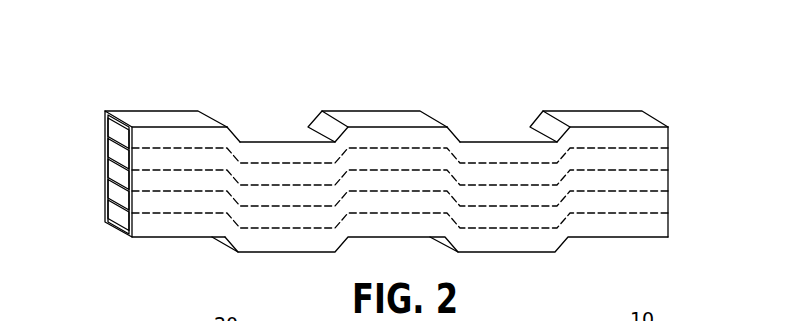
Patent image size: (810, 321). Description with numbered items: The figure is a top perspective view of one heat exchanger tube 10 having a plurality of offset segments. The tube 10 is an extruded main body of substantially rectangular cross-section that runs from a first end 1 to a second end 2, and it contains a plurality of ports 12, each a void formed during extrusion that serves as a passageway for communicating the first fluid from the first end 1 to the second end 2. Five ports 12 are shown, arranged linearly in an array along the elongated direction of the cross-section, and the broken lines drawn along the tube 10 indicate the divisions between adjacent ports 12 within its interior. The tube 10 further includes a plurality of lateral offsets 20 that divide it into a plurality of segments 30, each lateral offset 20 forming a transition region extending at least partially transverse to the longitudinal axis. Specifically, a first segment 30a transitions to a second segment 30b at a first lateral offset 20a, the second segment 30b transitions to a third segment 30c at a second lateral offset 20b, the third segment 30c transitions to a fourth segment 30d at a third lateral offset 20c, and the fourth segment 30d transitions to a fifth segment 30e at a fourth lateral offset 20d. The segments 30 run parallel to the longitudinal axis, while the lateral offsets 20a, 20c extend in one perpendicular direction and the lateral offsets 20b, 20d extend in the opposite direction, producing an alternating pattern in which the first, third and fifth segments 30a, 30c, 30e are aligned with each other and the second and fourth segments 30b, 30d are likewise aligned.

The tube 10 is at (152, 38).
The first end 1 is at (105, 111).
The second end 2 is at (636, 111).
The ports 12 is at (113, 131).
The lateral offsets 20 is at (222, 245).
The first lateral offset 20a is at (233, 127).
The second lateral offset 20b is at (320, 124).
The third lateral offset 20c is at (455, 127).
The fourth lateral offset 20d is at (540, 124).
The segments 30 is at (163, 237).
The first segment 30a is at (168, 119).
The second segment 30b is at (268, 135).
The third segment 30c is at (377, 118).
The fourth segment 30d is at (487, 135).
The fifth segment 30e is at (600, 117).